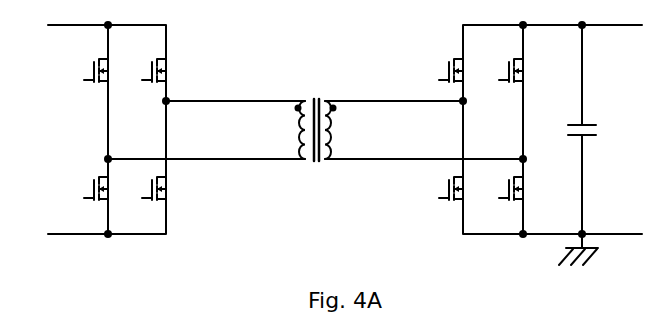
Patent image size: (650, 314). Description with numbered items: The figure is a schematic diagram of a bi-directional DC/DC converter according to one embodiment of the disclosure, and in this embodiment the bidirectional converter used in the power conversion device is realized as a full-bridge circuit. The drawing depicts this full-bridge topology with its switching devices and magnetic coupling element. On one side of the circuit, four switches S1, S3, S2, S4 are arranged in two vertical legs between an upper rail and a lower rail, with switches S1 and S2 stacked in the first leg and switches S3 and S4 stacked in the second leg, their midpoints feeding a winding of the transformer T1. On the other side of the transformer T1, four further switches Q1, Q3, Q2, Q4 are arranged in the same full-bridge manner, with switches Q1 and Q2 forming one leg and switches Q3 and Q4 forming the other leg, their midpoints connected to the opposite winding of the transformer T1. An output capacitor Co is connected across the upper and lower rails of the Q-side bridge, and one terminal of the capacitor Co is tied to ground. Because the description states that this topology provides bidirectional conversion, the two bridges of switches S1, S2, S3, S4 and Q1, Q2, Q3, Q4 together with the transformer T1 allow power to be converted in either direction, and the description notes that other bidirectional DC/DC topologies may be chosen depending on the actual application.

The primary switch S1 is at (86, 70).
The primary switch S2 is at (86, 188).
The primary switch S3 is at (144, 70).
The primary switch S4 is at (144, 188).
The secondary switch Q1 is at (441, 70).
The secondary switch Q2 is at (441, 188).
The secondary switch Q3 is at (500, 70).
The secondary switch Q4 is at (500, 188).
The transformer T1 is at (316, 119).
The output capacitor Co is at (569, 136).